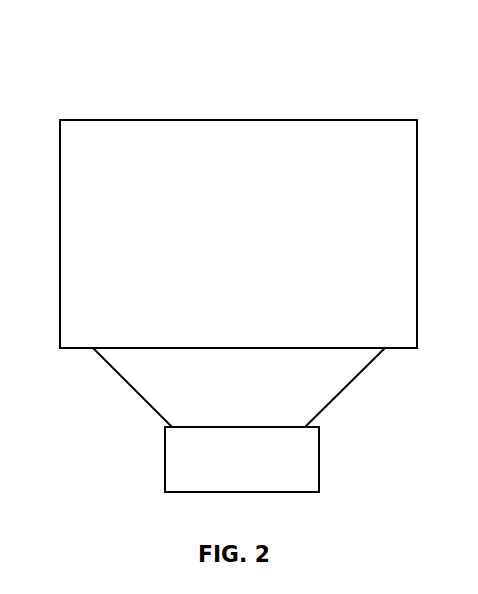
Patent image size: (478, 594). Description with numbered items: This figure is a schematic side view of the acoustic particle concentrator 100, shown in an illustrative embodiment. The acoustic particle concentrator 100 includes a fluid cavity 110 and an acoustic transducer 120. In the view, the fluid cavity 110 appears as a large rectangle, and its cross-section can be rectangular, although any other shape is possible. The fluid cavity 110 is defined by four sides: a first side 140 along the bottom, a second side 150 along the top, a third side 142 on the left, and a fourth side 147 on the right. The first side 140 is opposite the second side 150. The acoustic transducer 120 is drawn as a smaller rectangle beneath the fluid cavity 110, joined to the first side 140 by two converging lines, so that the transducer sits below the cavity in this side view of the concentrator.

The acoustic particle concentrator 100 is at (348, 84).
The fluid cavity 110 is at (115, 121).
The acoustic transducer 120 is at (165, 470).
The first side 140 is at (136, 351).
The third side 142 is at (63, 228).
The fourth side 147 is at (415, 223).
The second side 150 is at (219, 119).